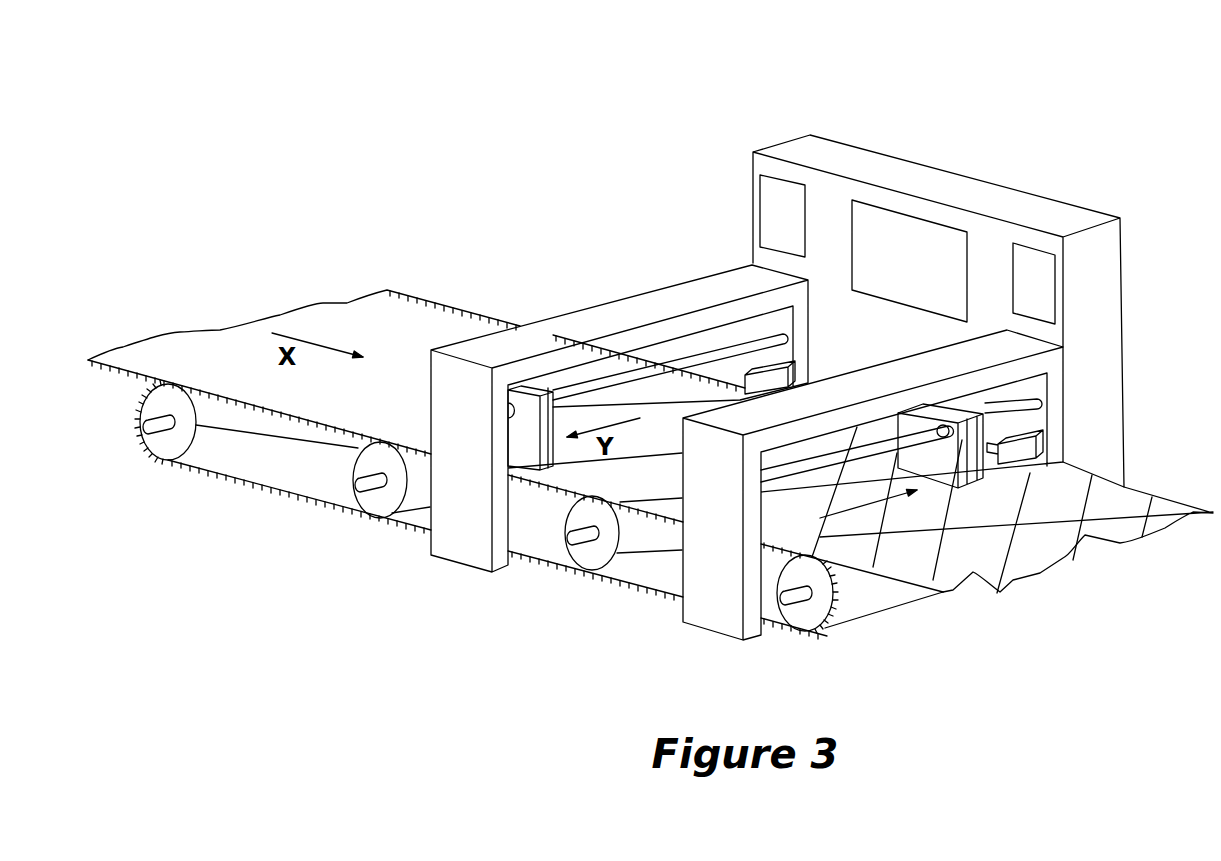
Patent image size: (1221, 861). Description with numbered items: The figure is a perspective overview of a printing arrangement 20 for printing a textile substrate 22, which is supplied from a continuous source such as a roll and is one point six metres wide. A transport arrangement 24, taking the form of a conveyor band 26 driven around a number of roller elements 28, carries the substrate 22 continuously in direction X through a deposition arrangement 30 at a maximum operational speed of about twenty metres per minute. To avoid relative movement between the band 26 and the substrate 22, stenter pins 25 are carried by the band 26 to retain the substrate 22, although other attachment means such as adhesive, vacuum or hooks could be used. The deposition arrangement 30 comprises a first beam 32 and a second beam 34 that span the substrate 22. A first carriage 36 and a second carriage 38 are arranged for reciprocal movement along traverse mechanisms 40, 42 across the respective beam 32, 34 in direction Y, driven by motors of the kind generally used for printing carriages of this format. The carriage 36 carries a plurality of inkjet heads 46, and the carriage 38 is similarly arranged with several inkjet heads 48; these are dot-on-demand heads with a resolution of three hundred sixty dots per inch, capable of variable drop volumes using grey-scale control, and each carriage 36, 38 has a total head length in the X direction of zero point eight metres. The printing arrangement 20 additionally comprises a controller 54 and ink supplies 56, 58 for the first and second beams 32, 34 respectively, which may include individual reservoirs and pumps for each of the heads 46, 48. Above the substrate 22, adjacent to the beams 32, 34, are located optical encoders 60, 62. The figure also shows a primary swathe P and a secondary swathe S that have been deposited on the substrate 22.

The printing arrangement 20 is at (595, 148).
The textile substrate 22 is at (410, 303).
The transport arrangement 24 is at (135, 412).
The stenter pins 25 is at (207, 473).
The conveyor band 26 is at (307, 480).
The roller elements 28 is at (387, 500).
The deposition arrangement 30 is at (305, 607).
The first beam 32 is at (470, 550).
The second beam 34 is at (713, 608).
The first carriage 36 is at (527, 387).
The second carriage 38 is at (980, 447).
The traverse mechanism 40 is at (712, 357).
The traverse mechanism 42 is at (987, 392).
The inkjet heads 46 is at (553, 445).
The inkjet heads 48 is at (965, 470).
The controller 54 is at (920, 237).
The ink supply 56 is at (780, 197).
The ink supply 58 is at (1040, 277).
The optical encoder 60 is at (765, 378).
The optical encoder 62 is at (1023, 448).
The primary swathe P is at (1087, 535).
The secondary swathe S is at (983, 563).